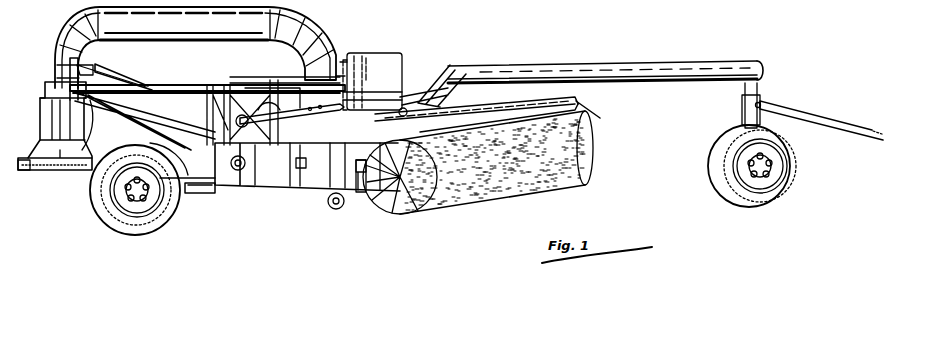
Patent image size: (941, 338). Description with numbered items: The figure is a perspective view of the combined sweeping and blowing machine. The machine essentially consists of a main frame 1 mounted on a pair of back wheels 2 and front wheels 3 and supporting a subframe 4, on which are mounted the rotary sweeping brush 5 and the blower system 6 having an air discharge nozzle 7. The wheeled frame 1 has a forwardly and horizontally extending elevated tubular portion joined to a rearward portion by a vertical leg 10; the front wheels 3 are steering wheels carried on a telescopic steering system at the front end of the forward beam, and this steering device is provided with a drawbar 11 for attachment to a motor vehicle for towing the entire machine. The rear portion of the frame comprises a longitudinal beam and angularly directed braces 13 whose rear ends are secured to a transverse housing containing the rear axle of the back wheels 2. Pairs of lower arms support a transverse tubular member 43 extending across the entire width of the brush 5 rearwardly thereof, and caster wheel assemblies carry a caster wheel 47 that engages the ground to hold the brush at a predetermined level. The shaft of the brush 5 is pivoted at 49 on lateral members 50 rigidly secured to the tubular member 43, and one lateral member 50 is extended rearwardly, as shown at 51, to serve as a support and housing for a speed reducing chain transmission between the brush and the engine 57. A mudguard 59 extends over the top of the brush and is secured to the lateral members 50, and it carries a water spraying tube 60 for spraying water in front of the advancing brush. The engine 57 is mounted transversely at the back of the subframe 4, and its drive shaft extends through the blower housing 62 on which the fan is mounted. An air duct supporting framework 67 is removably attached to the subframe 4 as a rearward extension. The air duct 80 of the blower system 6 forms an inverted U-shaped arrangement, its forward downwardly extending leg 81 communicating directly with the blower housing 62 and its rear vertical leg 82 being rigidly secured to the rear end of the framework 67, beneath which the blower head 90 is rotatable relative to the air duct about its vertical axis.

The main frame 1 is at (661, 98).
The back wheels 2 is at (90, 192).
The front wheels 3 is at (790, 176).
The subframe 4 is at (242, 186).
The rotary sweeping brush 5 is at (476, 196).
The blower system 6 is at (183, 30).
The air discharge nozzle 7 is at (30, 165).
The vertical leg 10 is at (742, 110).
The drawbar 11 is at (818, 120).
The braces 13 is at (205, 193).
The transverse tubular member 43 is at (292, 182).
The caster wheel 47 is at (337, 210).
The pivot 49 is at (366, 194).
The lateral members 50 is at (326, 183).
The rearward extension 51 is at (266, 186).
The engine 57 is at (383, 52).
The mudguard 59 is at (600, 118).
The water spraying tube 60 is at (578, 98).
The blower housing 62 is at (272, 92).
The air duct supporting framework 67 is at (135, 70).
The air duct 80 is at (222, 33).
The forward downwardly extending leg 81 is at (338, 52).
The rear vertical leg 82 is at (62, 42).
The blower head 90 is at (40, 125).